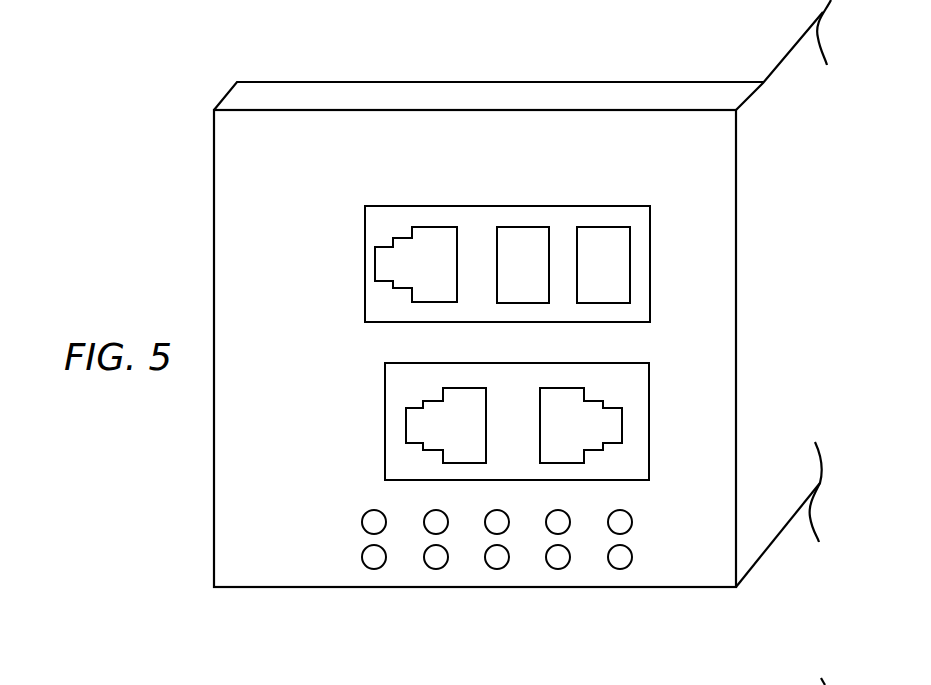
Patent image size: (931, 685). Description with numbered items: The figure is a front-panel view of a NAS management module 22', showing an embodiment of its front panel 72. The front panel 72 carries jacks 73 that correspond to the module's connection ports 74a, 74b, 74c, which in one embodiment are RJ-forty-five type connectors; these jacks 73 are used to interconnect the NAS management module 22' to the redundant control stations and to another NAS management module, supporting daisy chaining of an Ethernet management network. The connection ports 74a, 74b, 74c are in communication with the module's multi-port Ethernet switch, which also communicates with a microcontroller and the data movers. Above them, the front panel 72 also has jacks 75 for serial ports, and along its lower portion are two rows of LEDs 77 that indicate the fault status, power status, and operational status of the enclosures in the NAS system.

The NAS management module 22' is at (522, 342).
The front panel 72 is at (238, 465).
The jacks 73 is at (549, 403).
The connection port 74a is at (450, 282).
The connection port 74b is at (469, 439).
The connection port 74c is at (593, 439).
The jacks for serial ports 75 is at (514, 278).
The LEDs 77 is at (483, 574).